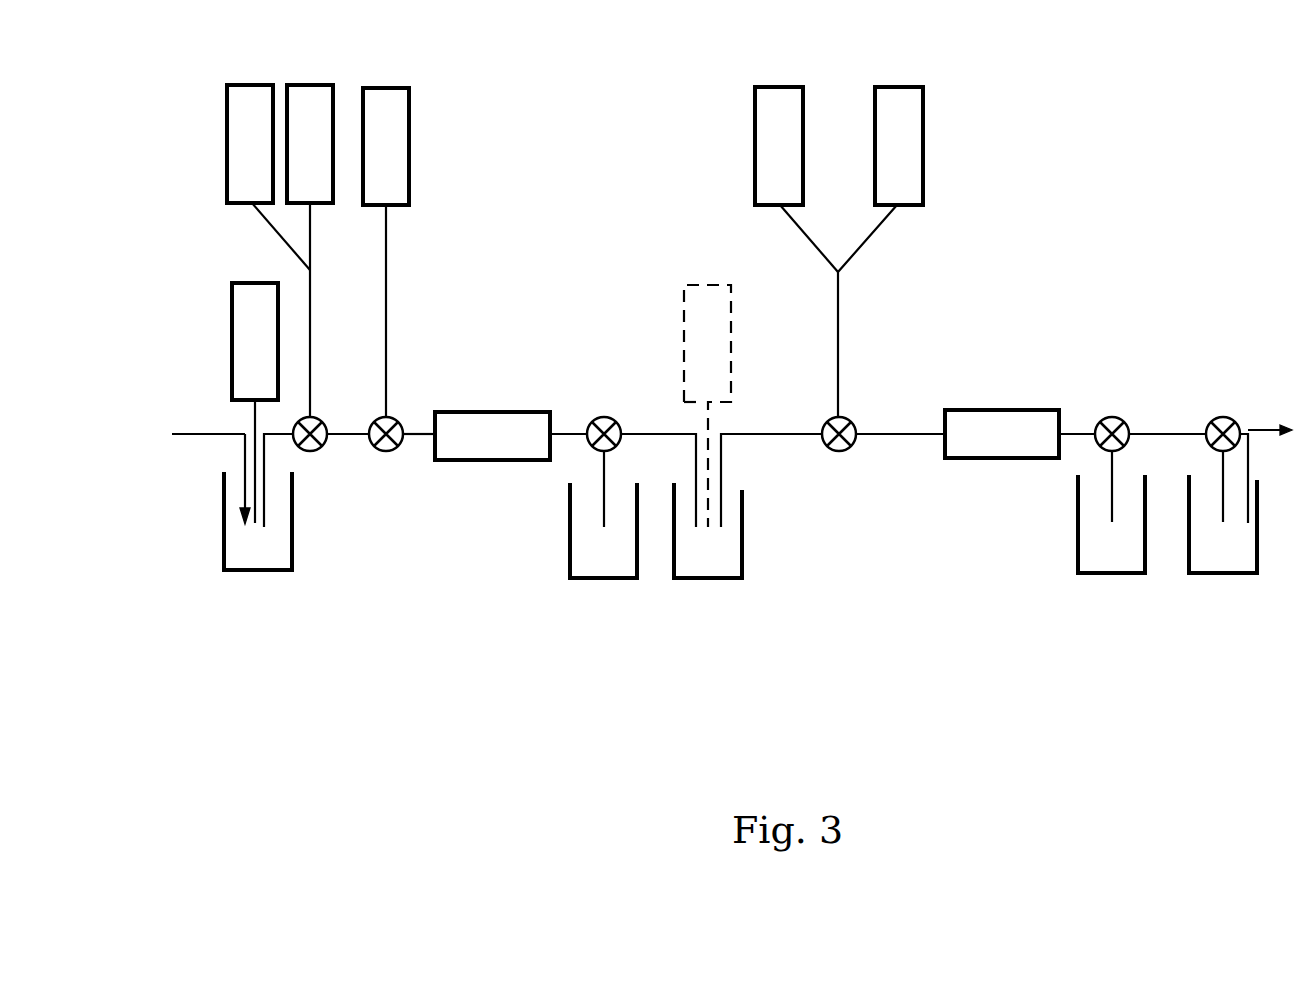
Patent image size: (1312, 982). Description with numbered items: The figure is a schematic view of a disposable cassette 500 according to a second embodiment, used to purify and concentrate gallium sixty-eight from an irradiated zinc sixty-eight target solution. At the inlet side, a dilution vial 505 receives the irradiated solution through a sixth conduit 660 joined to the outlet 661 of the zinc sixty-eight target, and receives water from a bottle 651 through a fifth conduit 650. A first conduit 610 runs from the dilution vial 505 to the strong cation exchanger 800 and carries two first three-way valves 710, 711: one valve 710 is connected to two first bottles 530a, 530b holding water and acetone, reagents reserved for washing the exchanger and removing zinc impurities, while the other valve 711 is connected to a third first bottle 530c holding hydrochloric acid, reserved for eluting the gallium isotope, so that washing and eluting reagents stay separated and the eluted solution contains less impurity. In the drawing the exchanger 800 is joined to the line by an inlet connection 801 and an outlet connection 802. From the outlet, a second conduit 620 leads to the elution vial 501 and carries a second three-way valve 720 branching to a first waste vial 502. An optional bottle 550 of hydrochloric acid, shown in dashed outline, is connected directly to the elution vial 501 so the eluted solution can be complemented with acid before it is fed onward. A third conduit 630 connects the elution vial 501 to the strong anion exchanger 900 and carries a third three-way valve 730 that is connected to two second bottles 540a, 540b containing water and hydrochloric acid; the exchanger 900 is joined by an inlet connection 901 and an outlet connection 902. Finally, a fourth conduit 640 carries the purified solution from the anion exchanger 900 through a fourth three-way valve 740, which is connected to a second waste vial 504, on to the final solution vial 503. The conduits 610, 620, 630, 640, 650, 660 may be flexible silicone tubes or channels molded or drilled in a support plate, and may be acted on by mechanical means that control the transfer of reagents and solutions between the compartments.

The disposable cassette 500 is at (596, 118).
The first bottle 530a is at (227, 143).
The first bottle 530b is at (308, 83).
The first bottle 530c is at (409, 132).
The second bottle 540a is at (755, 147).
The second bottle 540b is at (923, 130).
The bottle 651 is at (232, 340).
The fifth conduit 650 is at (250, 413).
The outlet of the 68Zn target 661 is at (172, 434).
The sixth conduit 660 is at (185, 434).
The dilution vial 505 is at (226, 570).
The first 3-way valve 710 is at (313, 417).
The first 3-way valve 711 is at (393, 418).
The first conduit 610 is at (345, 441).
The pump inlet line 801 is at (433, 437).
The strong cation exchanger 800 is at (470, 412).
The pump outlet line 802 is at (552, 423).
The third valve 720 is at (590, 444).
The second conduit 620 is at (645, 434).
The optional bottle 550 is at (684, 332).
The waste container 502 is at (588, 578).
The elution vial 501 is at (713, 578).
The third conduit 630 is at (800, 434).
The fourth valve 730 is at (840, 453).
The filter inlet line 901 is at (945, 442).
The strong anion exchanger 900 is at (993, 410).
The filter outlet line 902 is at (1063, 410).
The fifth valve 740 is at (1100, 444).
The fourth conduit 640 is at (1170, 434).
The collection container 504 is at (1108, 573).
The output container 503 is at (1228, 573).